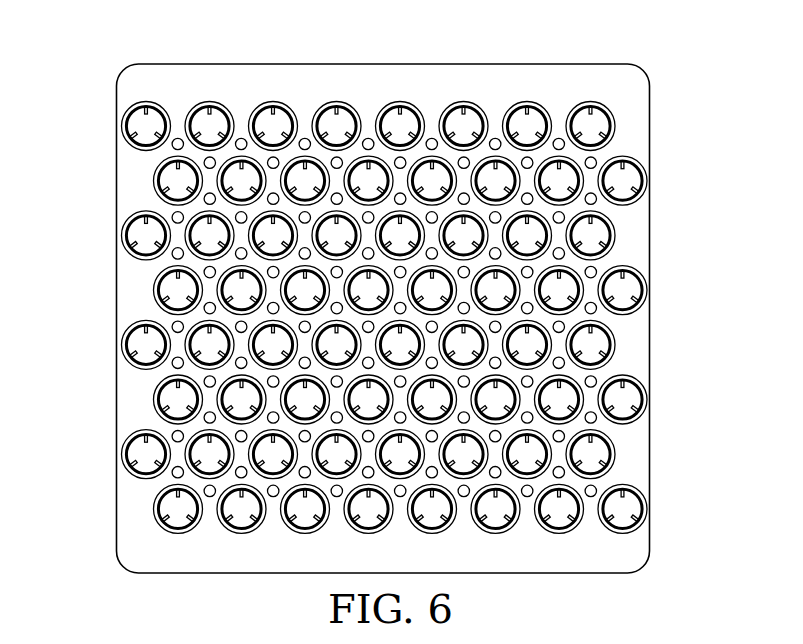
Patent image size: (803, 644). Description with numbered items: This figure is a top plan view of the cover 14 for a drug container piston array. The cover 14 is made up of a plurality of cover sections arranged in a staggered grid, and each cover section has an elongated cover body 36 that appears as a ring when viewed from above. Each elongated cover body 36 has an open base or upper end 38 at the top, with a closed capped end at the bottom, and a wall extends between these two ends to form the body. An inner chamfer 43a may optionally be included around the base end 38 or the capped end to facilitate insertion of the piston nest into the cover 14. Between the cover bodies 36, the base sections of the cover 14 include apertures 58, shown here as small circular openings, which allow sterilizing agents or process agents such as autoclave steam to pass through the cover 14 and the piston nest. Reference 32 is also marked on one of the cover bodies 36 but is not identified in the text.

The cover 14 is at (121, 562).
The cup holder 32 is at (615, 234).
The elongated cover body 36 is at (647, 290).
The open base end 38 is at (121, 234).
The aperture 58 is at (596, 158).
The inner chamfer 43a is at (178, 534).